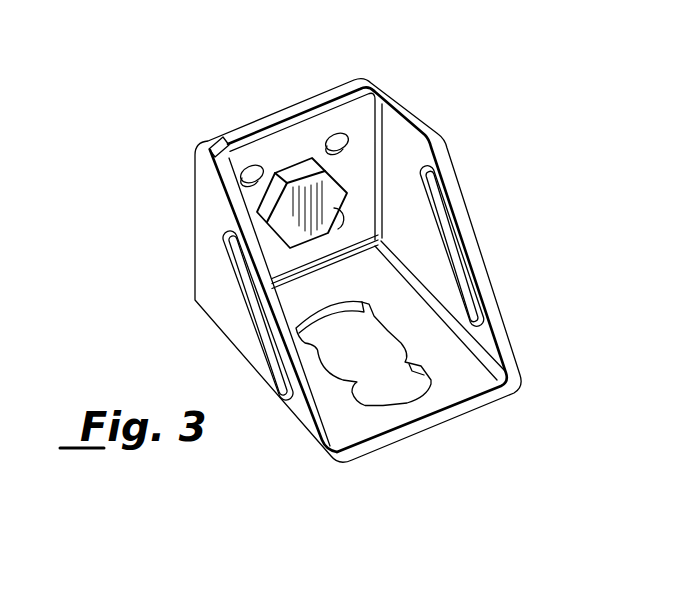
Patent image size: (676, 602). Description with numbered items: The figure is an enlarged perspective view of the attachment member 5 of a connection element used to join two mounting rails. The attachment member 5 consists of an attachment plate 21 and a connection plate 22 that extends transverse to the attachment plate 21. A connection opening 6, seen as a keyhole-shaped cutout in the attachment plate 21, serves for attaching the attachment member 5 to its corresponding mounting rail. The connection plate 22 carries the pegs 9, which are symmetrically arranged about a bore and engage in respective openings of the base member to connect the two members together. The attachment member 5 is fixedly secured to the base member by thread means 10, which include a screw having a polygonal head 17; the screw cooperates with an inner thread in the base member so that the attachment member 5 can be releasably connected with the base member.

The attachment member 5 is at (449, 132).
The connection opening 6 is at (382, 381).
The pegs 9 is at (343, 150).
The thread means 10 is at (292, 160).
The polygonal head 17 is at (292, 207).
The attachment plate 21 is at (350, 423).
The connection plate 22 is at (352, 118).